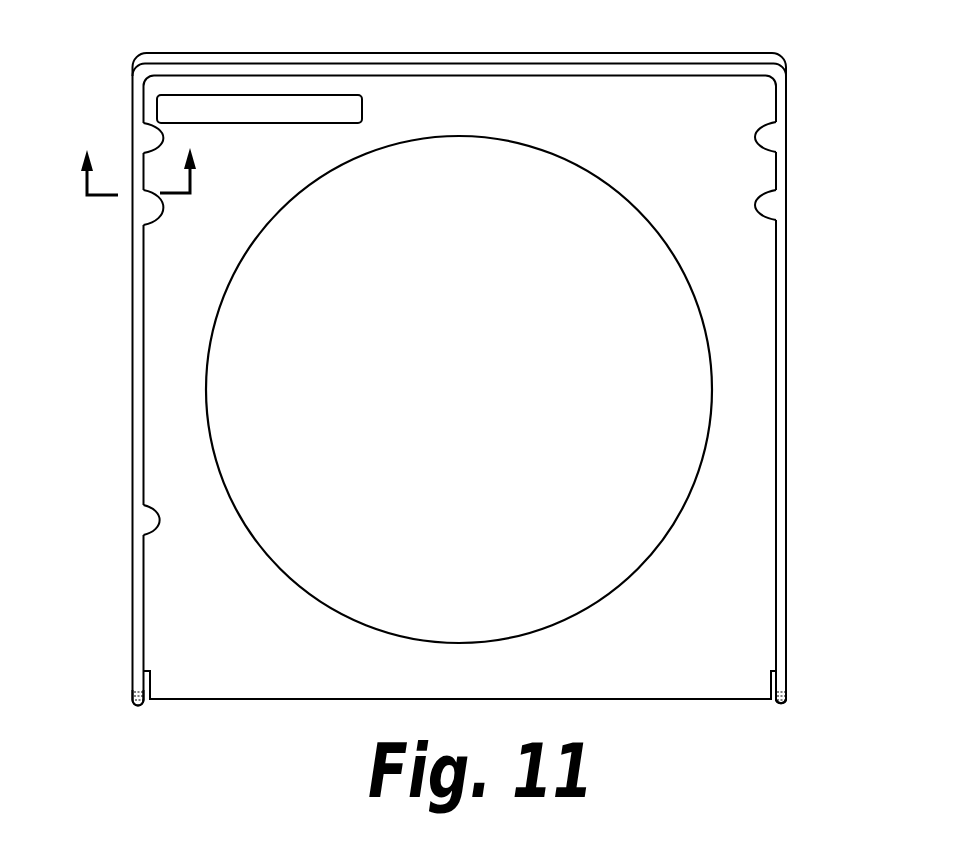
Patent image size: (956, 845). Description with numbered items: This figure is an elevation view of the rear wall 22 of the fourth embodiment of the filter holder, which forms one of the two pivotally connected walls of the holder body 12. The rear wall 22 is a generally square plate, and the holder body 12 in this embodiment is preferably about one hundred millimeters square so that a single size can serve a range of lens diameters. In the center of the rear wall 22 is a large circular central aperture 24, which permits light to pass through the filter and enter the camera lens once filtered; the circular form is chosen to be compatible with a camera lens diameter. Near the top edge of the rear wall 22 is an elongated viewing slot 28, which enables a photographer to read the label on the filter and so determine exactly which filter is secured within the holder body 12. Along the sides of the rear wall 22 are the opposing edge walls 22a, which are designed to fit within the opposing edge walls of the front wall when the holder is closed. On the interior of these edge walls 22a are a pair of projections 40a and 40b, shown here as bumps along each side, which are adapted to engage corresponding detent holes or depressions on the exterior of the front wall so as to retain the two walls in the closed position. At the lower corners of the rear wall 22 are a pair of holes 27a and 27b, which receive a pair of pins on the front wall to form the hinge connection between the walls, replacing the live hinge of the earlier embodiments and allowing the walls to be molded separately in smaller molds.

The rear wall 22 is at (530, 52).
The edge walls 22a is at (151, 527).
The central aperture 24 is at (263, 548).
The hole 27a is at (790, 690).
The hole 27b is at (135, 690).
The viewing slot 28 is at (306, 97).
The projection 40a is at (151, 131).
The projection 40b is at (152, 217).
The holder body 12 is at (137, 174).